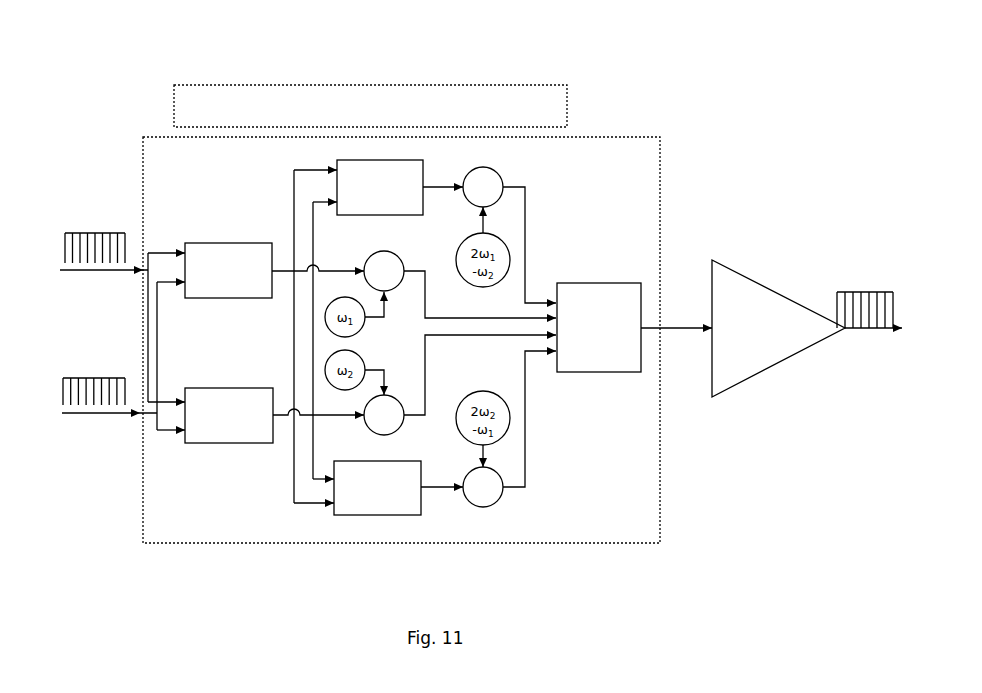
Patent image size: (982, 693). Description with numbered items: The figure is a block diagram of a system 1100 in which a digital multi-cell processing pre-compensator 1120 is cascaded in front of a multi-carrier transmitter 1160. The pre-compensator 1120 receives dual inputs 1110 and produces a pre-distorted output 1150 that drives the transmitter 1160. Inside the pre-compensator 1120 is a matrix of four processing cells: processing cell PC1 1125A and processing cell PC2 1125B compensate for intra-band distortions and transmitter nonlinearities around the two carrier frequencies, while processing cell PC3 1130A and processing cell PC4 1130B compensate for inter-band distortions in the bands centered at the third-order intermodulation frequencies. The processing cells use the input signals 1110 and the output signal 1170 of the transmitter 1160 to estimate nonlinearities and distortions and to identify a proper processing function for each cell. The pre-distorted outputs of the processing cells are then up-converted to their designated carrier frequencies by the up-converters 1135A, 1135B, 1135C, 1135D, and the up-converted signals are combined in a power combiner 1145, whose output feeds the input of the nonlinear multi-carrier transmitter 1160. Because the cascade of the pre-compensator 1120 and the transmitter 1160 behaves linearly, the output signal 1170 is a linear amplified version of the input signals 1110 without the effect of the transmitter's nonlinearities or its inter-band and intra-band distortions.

The system 1100 is at (505, 58).
The dual inputs 1110 is at (45, 360).
The digital multi-cell processing pre-compensator 1120 is at (400, 543).
The processing cell PC1 1125A is at (228, 261).
The processing cell PC2 1125B is at (229, 403).
The processing cell PC3 1130A is at (380, 178).
The processing cell PC4 1130B is at (377, 498).
The up-converter 1135A is at (410, 243).
The up-converter 1135B is at (403, 425).
The up-converter 1135C is at (500, 165).
The up-converter 1135D is at (498, 507).
The power combiner 1145 is at (600, 372).
The pre-distorted output 1150 is at (685, 220).
The multi-carrier transmitter 1160 is at (777, 368).
The output signal 1170 is at (850, 278).